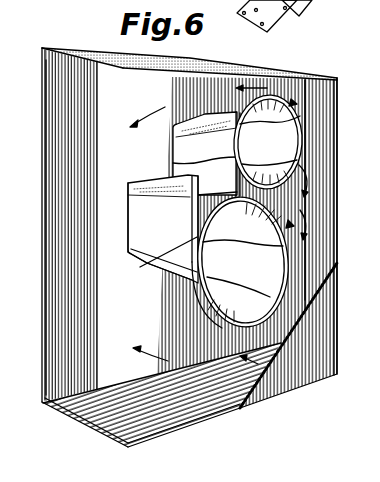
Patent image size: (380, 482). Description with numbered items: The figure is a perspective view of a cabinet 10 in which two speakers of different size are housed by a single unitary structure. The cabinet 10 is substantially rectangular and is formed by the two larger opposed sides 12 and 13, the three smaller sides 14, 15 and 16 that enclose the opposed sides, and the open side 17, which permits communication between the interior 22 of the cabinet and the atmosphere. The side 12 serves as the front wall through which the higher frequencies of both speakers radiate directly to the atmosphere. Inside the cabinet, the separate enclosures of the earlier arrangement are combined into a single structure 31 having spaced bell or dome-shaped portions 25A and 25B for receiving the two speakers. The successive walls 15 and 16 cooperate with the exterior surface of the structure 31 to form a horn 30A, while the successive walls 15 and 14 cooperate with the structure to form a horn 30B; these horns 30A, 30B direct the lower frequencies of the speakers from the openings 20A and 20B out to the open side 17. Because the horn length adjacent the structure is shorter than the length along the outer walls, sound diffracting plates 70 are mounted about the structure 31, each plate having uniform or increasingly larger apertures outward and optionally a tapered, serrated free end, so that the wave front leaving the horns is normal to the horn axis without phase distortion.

The cabinet 10 is at (38, 73).
The side 12 is at (308, 363).
The side 13 is at (43, 164).
The side 14 is at (262, 62).
The side 15 is at (320, 247).
The side 16 is at (90, 418).
The open side 17 is at (62, 257).
The opening 20A is at (147, 267).
The opening 20B is at (175, 163).
The interior of the cabinet 22 is at (379, 203).
The bell or dome-shaped portion 25A is at (242, 261).
The bell or dome-shaped portion 25B is at (268, 142).
The horn 30A is at (141, 321).
The horn 30B is at (167, 104).
The single structure 31 is at (132, 209).
The sound diffracting plates 70 is at (288, 305).